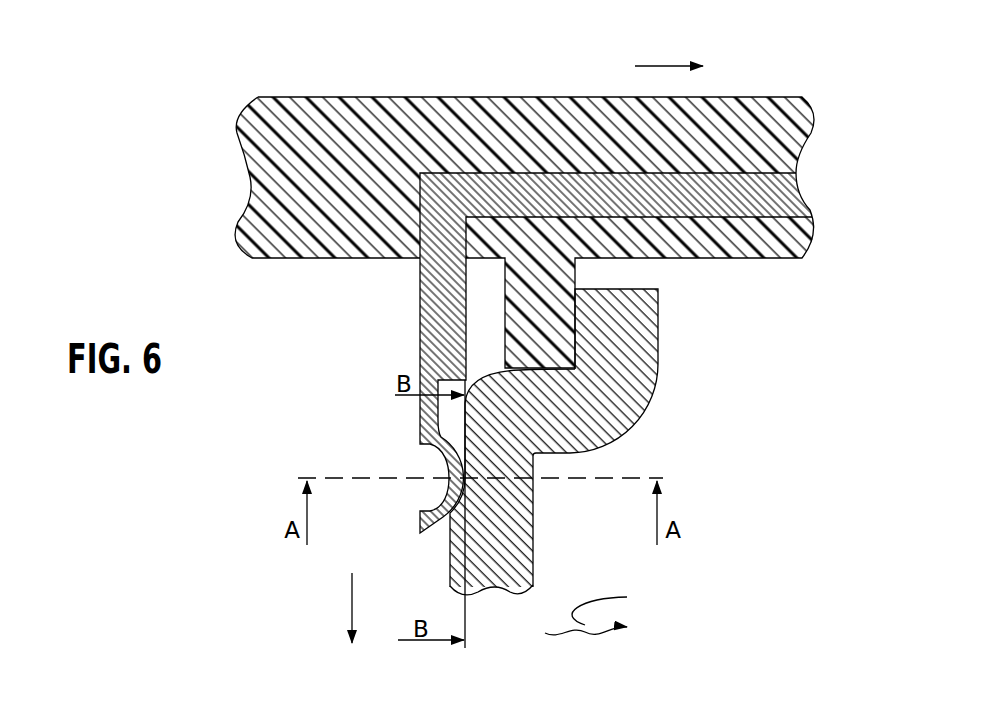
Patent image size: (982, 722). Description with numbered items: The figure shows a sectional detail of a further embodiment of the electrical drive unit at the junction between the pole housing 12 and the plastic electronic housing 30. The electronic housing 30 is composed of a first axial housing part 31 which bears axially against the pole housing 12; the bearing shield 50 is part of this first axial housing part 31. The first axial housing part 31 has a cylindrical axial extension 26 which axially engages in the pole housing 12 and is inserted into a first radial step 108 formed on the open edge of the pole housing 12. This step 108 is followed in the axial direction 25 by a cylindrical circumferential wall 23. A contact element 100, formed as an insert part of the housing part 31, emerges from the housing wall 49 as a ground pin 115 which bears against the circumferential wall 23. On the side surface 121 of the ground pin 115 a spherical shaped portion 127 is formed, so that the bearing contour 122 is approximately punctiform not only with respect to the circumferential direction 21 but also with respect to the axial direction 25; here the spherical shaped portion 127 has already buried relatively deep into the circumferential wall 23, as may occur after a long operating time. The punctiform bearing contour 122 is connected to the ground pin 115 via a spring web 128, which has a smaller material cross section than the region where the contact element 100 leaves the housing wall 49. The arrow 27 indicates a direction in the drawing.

The electronic housing 30 is at (524, 207).
The first axial housing part 31 is at (524, 207).
The housing wall 49 is at (524, 207).
The bearing shield 50 is at (524, 232).
The contact element 100 is at (566, 290).
The direction 27 is at (663, 66).
The cylindrical axial extension 26 is at (540, 317).
The first radial step 108 is at (592, 442).
The spring web 128 is at (566, 353).
The ground pin 115 is at (566, 353).
The spherical shaped portion 127 is at (452, 495).
The side surface 121 is at (563, 442).
The bearing contour 122 is at (467, 497).
The pole housing 12 is at (592, 442).
The cylindrical circumferential wall 23 is at (592, 442).
The axial direction 25 is at (350, 603).
The circumferential direction 21 is at (570, 622).